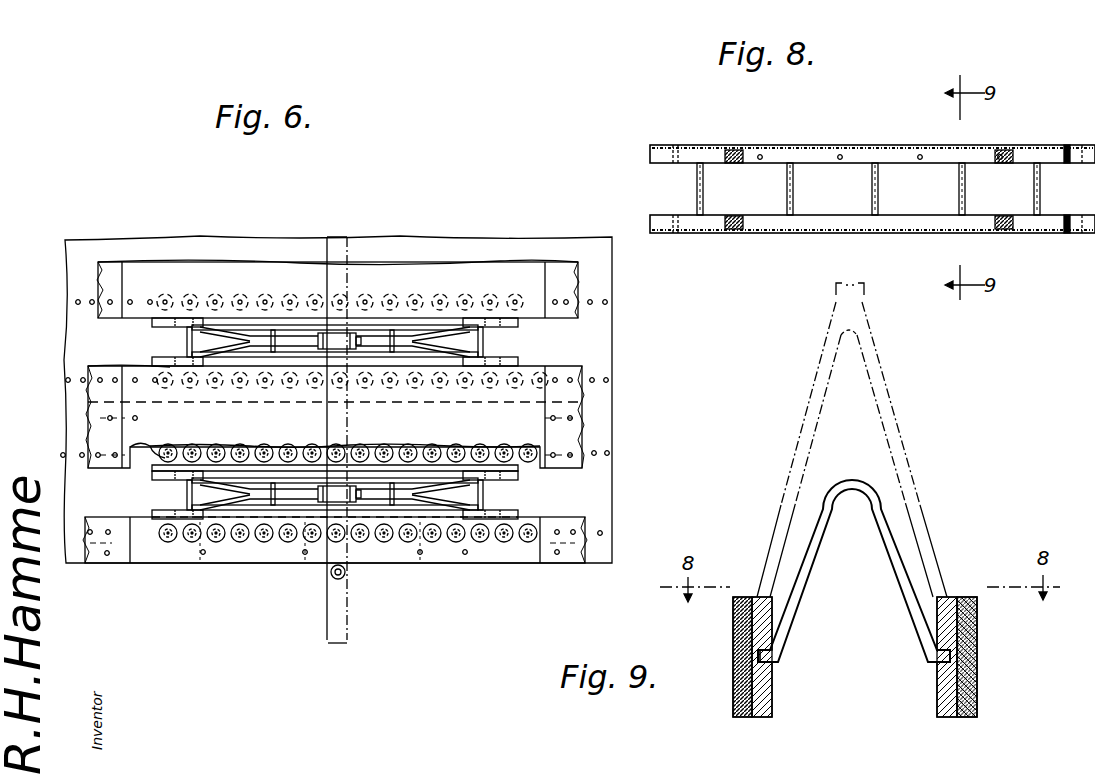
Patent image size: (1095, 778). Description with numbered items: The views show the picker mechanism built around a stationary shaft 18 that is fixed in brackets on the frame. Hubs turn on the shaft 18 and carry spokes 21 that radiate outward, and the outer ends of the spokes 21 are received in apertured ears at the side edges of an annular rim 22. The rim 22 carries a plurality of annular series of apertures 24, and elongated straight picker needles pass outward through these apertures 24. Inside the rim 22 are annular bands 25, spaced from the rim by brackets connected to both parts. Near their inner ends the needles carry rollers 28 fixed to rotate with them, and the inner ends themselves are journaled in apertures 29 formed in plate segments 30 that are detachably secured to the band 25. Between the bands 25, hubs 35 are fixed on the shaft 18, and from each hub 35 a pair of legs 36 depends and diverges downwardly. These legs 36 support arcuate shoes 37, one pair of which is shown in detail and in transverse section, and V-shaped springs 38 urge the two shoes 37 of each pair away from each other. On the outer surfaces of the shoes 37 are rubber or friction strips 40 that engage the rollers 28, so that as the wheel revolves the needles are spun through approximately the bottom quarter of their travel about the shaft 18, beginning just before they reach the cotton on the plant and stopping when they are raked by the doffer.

In FIG. 6, the stationary shaft 18 is at (343, 236).
In FIG. 6, the spokes 21 is at (348, 575).
In FIG. 6, the annular rim 22 is at (178, 243).
In FIG. 6, the apertures 24 is at (90, 300).
In FIG. 6, the annular bands 25 is at (85, 415).
In FIG. 6, the rollers 28 is at (470, 300).
In FIG. 6, the apertures 29 is at (95, 378).
In FIG. 6, the plate segments 30 is at (133, 447).
In FIG. 6, the hubs 35 is at (345, 334).
In FIG. 6, the legs 36 is at (270, 338).
In FIG. 8, the legs 36 is at (740, 212).
In FIG. 9, the legs 36 is at (822, 378).
In FIG. 6, the arcuate shoes 37 is at (157, 318).
In FIG. 8, the arcuate shoes 37 is at (763, 150).
In FIG. 9, the arcuate shoes 37 is at (945, 693).
In FIG. 6, the V-shaped springs 38 is at (186, 342).
In FIG. 8, the V-shaped springs 38 is at (787, 222).
In FIG. 9, the V-shaped springs 38 is at (882, 518).
In FIG. 6, the friction strips 40 is at (525, 513).
In FIG. 8, the friction strips 40 is at (812, 147).
In FIG. 9, the friction strips 40 is at (735, 684).